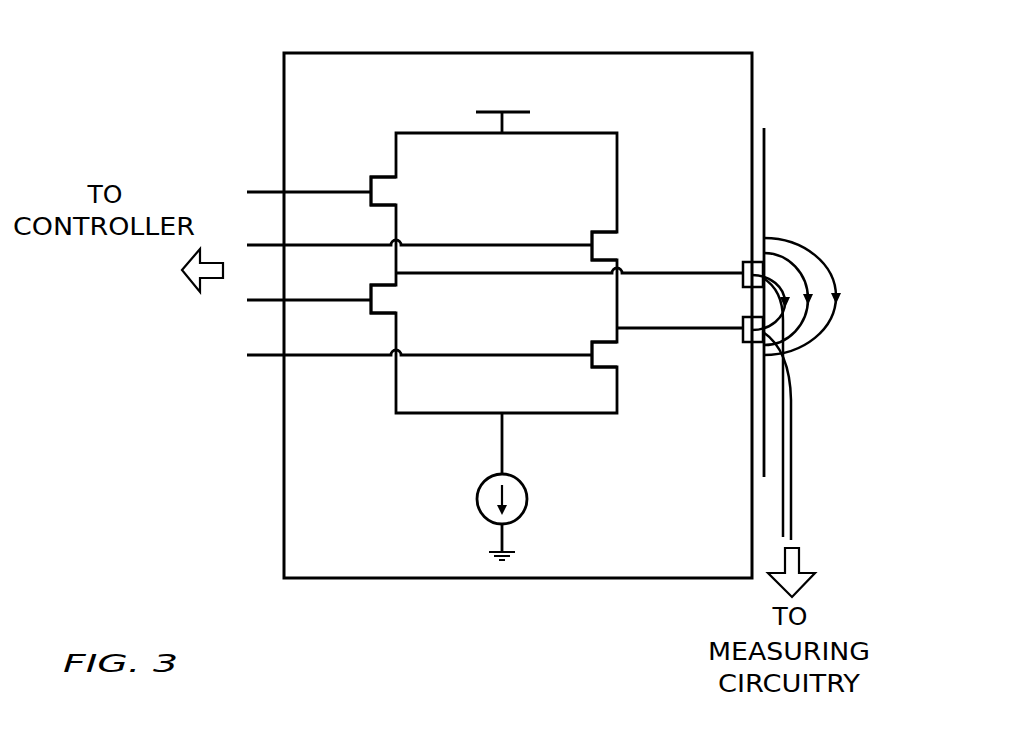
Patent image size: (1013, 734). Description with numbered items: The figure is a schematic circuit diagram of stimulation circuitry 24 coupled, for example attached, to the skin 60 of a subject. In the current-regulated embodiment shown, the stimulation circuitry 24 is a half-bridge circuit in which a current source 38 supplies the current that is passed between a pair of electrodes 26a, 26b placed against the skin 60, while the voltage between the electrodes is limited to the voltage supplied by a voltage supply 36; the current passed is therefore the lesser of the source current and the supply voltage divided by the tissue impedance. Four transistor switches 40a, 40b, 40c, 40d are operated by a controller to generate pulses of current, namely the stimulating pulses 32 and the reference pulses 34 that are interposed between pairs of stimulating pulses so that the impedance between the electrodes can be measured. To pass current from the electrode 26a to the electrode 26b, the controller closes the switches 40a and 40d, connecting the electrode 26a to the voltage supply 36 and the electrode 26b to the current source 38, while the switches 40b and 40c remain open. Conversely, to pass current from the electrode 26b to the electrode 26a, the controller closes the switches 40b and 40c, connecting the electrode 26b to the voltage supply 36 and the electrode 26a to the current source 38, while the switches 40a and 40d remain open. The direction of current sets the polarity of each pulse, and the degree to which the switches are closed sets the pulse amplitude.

The stimulation circuitry 24 is at (338, 64).
The electrode 26a is at (743, 262).
The electrode 26b is at (743, 342).
The stimulating pulses 32 is at (824, 274).
The reference pulses 34 is at (849, 245).
The voltage supply 36 is at (515, 112).
The current source 38 is at (528, 494).
The switch 40a is at (375, 177).
The switch 40b is at (376, 316).
The switch 40c is at (593, 232).
The switch 40d is at (597, 367).
The skin 60 is at (764, 147).